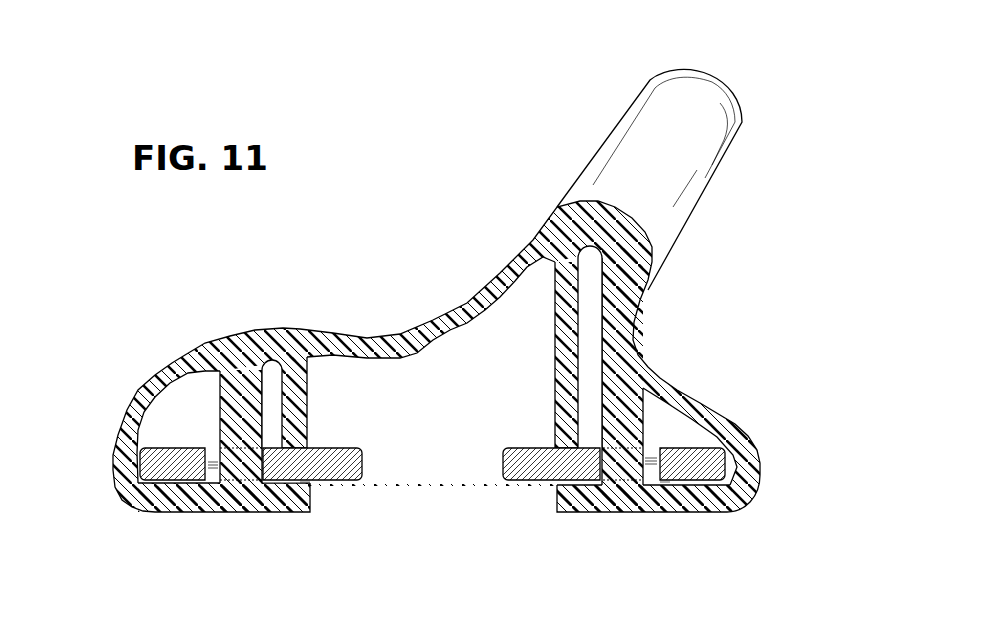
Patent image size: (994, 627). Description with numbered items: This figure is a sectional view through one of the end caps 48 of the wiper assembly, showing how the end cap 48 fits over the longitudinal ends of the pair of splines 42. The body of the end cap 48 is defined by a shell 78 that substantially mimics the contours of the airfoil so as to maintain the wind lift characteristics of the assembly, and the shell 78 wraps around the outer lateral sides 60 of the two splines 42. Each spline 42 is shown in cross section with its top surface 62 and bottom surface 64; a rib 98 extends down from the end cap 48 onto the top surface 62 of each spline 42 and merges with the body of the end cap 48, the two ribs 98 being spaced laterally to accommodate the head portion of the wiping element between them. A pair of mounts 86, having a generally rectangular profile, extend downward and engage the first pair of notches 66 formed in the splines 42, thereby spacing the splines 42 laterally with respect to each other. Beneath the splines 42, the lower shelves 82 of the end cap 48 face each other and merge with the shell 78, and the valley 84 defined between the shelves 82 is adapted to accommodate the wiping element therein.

The end cap 48 is at (746, 95).
The lateral side 60 is at (118, 462).
The shell 78 is at (379, 340).
The rib 98 is at (306, 437).
The top surface 62 is at (158, 448).
The spline 42 is at (693, 440).
The valley 84 is at (556, 497).
The lower shelf 82 is at (274, 513).
The mount 86 is at (238, 472).
The first pair of notches 66 is at (210, 477).
The bottom surface 64 is at (327, 483).